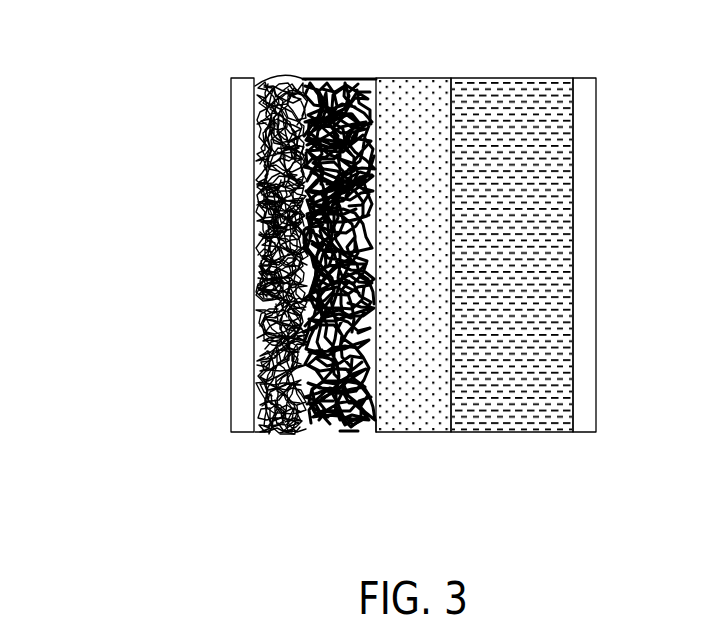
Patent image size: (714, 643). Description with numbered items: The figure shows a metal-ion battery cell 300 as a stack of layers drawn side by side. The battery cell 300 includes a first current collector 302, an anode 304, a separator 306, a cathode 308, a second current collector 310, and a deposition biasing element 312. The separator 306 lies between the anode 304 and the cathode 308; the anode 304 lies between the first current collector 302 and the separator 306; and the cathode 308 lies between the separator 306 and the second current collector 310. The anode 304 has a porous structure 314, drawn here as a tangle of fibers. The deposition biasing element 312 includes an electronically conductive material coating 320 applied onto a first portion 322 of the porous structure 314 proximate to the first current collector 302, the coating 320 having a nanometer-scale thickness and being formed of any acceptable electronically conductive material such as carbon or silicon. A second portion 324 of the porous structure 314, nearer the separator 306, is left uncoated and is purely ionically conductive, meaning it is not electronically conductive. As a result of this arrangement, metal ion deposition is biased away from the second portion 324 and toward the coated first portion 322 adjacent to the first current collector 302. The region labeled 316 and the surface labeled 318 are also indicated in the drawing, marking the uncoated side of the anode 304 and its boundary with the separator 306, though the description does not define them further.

The metal-ion battery cell 300 is at (123, 76).
The first current collector 302 is at (232, 127).
The anode 304 is at (273, 83).
The separator 306 is at (415, 78).
The cathode 308 is at (520, 435).
The second current collector 310 is at (587, 435).
The deposition biasing element 312 is at (257, 256).
The porous structure 314 is at (261, 441).
The second region of anode 316 is at (311, 72).
The second surface of anode 318 is at (376, 440).
The electronically conductive material coating 320 is at (257, 205).
The first portion 322 is at (286, 440).
The second portion 324 is at (347, 441).